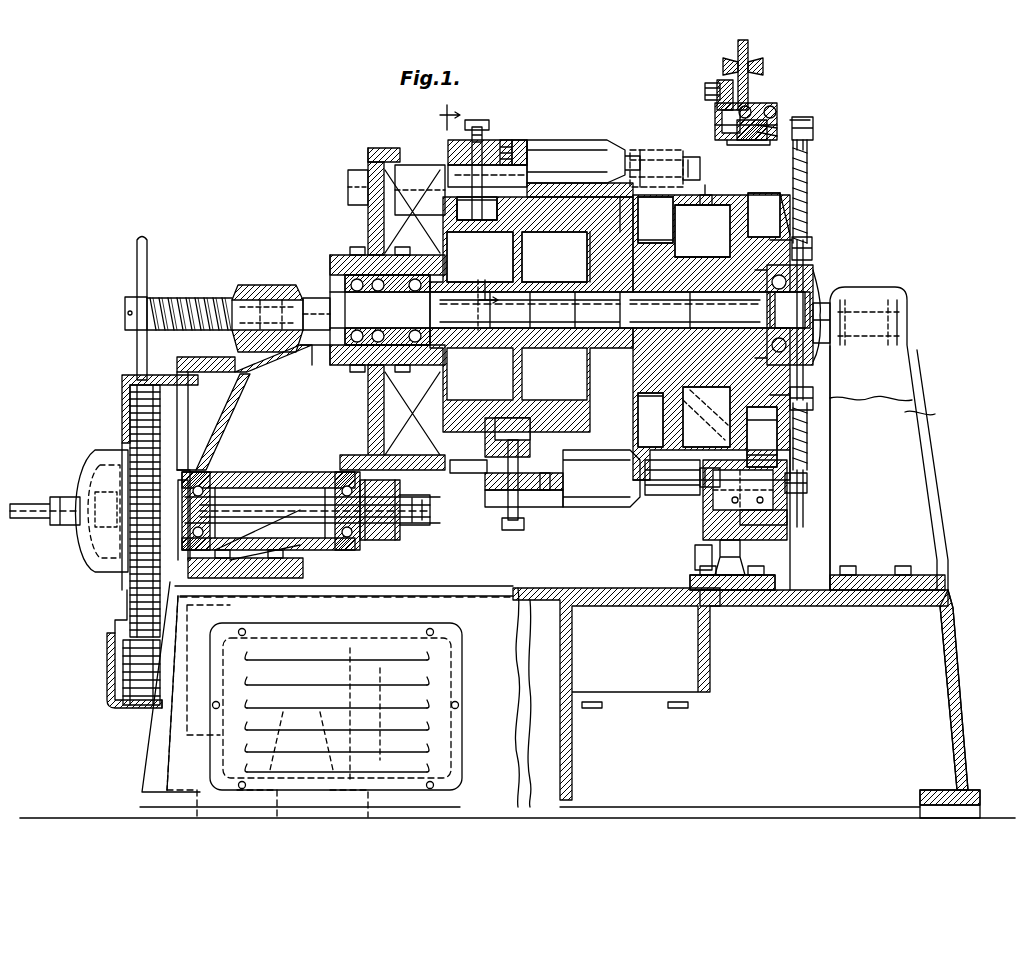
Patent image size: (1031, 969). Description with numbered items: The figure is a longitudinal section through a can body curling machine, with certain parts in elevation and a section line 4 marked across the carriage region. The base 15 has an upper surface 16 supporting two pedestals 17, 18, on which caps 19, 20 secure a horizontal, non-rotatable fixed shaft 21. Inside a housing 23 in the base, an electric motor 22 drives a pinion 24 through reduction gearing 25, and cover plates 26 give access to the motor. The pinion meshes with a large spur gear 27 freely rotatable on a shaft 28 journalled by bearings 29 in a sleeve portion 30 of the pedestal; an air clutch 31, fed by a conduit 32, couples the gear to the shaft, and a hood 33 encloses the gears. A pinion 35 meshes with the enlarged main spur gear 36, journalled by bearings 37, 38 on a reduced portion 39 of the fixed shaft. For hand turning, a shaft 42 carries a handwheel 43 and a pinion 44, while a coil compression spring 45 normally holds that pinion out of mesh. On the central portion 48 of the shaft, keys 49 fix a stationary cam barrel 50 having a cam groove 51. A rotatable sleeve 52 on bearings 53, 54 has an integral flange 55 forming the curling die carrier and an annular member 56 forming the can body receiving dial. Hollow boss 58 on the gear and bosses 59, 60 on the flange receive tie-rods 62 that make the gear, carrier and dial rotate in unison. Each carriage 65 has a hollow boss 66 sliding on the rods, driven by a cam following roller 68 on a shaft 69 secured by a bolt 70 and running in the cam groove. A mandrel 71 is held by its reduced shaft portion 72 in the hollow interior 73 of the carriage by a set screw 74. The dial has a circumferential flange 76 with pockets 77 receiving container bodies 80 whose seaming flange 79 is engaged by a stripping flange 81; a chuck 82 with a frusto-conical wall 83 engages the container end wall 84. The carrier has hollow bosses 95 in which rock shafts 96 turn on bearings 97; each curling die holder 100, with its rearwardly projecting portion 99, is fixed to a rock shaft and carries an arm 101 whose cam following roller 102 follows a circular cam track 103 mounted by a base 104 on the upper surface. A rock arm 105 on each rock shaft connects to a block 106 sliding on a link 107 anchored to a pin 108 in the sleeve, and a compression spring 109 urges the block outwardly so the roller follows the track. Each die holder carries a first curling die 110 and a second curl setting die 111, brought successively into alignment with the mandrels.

The section line 4- 4 is at (467, 208).
The base 15 is at (950, 672).
The upper surface 16 is at (783, 600).
The pedestal 17 is at (932, 463).
The pedestal 18 is at (222, 398).
The cap 19 is at (885, 300).
The cap 20 is at (248, 296).
The fixed shaft 21 is at (816, 305).
The electric motor 22 is at (365, 655).
The housing 23 is at (565, 638).
The pinion 24 is at (140, 688).
The reduction gearing 25 is at (235, 612).
The cover plates 26 is at (440, 655).
The large spur gear 27 is at (132, 602).
The shaft 28 is at (250, 505).
The bearings 29 is at (200, 490).
The sleeve portion 30 is at (282, 497).
The air clutch 31 is at (108, 448).
The conduit 32 is at (30, 504).
The hood 33 is at (120, 380).
The pinion 35 is at (390, 545).
The enlarged spur gear 36 is at (368, 413).
The bearing 37 is at (370, 275).
The bearing 38 is at (392, 210).
The reduced portion 39 is at (360, 342).
The shaft 42 is at (188, 300).
The handwheel 43 is at (140, 290).
The pinion 44 is at (315, 298).
The coil compression spring 45 is at (205, 300).
The central portion 48 is at (485, 355).
The keys 49 is at (478, 262).
The cam barrel 50 is at (612, 243).
The cam groove 51 is at (497, 210).
The rotatable sleeve 52 is at (728, 262).
The bearing 53 is at (620, 300).
The bearing 54 is at (776, 295).
The flange 55 is at (745, 228).
The annular member 56 is at (625, 222).
The hollow boss 58 is at (368, 170).
The boss 59 is at (760, 447).
The boss 60 is at (750, 195).
The tie-rod 62 is at (352, 192).
The carriage 65 is at (520, 528).
The hollow boss 66 is at (437, 172).
The cam following roller 68 is at (455, 216).
The shaft 69 is at (472, 140).
The bolt 70 is at (489, 128).
The mandrel 71 is at (585, 155).
The reduced shaft portion 72 is at (520, 180).
The hollow interior 73 is at (527, 160).
The set screw 74 is at (520, 140).
The circumferential flange 76 is at (655, 322).
The pocket 77 is at (668, 497).
The seaming flange 79 is at (635, 150).
The container body 80 is at (665, 145).
The stripping flange 81 is at (630, 195).
The chuck 82 is at (680, 425).
The frusto-conical wall 83 is at (700, 198).
The end wall 84 is at (685, 158).
The hollow boss 95 is at (768, 548).
The rock shaft 96 is at (777, 125).
The bearing 97 is at (747, 108).
The rearwardly projecting portion 99 is at (771, 216).
The curling die holder 100 is at (715, 118).
The arm 101 is at (712, 104).
The cam following roller 102 is at (740, 82).
The circular cam track 103 is at (738, 58).
The base 104 is at (765, 574).
The rock arm 105 is at (805, 120).
The block 106 is at (813, 128).
The link 107 is at (807, 160).
The pin 108 is at (812, 250).
The compression spring 109 is at (810, 185).
The first curling die 110 is at (708, 190).
The second curling die 111 is at (704, 488).